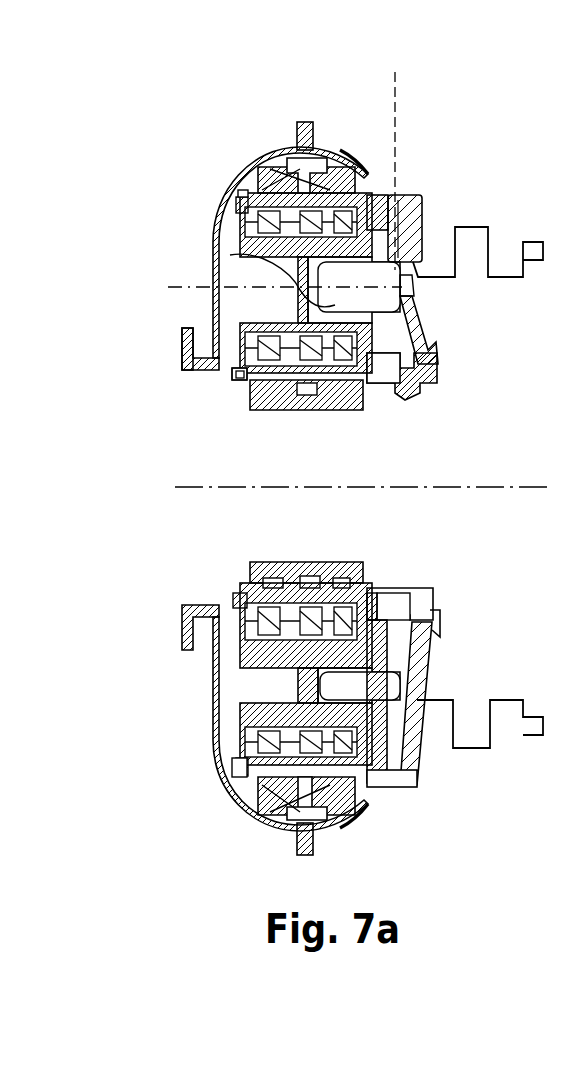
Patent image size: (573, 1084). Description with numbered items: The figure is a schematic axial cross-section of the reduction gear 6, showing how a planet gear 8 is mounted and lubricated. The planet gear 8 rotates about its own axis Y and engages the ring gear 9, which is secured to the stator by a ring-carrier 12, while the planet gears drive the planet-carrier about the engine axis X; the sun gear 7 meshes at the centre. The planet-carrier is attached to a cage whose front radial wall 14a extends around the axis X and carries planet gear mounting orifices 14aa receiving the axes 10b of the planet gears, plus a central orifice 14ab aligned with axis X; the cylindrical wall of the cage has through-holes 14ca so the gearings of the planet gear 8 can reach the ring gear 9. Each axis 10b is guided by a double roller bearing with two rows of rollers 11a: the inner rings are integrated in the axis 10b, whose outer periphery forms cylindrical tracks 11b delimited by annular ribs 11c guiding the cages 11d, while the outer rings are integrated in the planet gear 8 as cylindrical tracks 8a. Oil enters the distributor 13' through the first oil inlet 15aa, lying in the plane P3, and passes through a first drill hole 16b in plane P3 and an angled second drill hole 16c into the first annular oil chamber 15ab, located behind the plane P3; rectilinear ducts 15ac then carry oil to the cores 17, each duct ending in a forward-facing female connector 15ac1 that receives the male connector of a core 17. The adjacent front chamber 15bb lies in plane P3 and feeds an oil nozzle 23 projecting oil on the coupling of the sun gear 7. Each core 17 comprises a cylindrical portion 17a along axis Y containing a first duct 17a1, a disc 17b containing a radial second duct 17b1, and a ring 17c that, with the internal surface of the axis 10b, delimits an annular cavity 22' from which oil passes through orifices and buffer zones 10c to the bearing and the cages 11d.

The reduction gear 6 is at (465, 114).
The sun gear 7 is at (300, 408).
The planet gear 8 is at (360, 187).
The cylindrical track 8a is at (246, 765).
The ring gear 9 is at (336, 170).
The axis 10b is at (216, 358).
The buffer zone 10c is at (275, 700).
The roller 11a is at (310, 120).
The cylindrical track 11b is at (240, 222).
The annular rib 11c is at (300, 598).
The cage 11d is at (238, 600).
The ring-carrier 12 is at (296, 149).
The distributor 13' is at (459, 408).
The front radial wall 14a is at (240, 380).
The planet gear mounting orifice 14aa is at (240, 200).
The central orifice 14ab is at (240, 374).
The through-hole 14ca is at (262, 188).
The first oil inlet 15aa is at (392, 788).
The first annular oil chamber 15ab is at (436, 376).
The duct 15ac is at (424, 345).
The female connector 15ac1 is at (430, 245).
The second annular oil chamber 15bb is at (378, 385).
The first drill hole 16b is at (420, 760).
The second drill hole 16c is at (412, 655).
The core 17 is at (252, 322).
The cylindrical portion 17a is at (410, 308).
The first duct 17a1 is at (467, 226).
The disc 17b is at (230, 255).
The second duct 17b1 is at (422, 212).
The ring 17c is at (186, 338).
The annular cavity 22' is at (369, 576).
The oil nozzle 23 is at (408, 402).
The plane P3 is at (396, 90).
The axis X is at (485, 487).
The axis Y is at (168, 287).